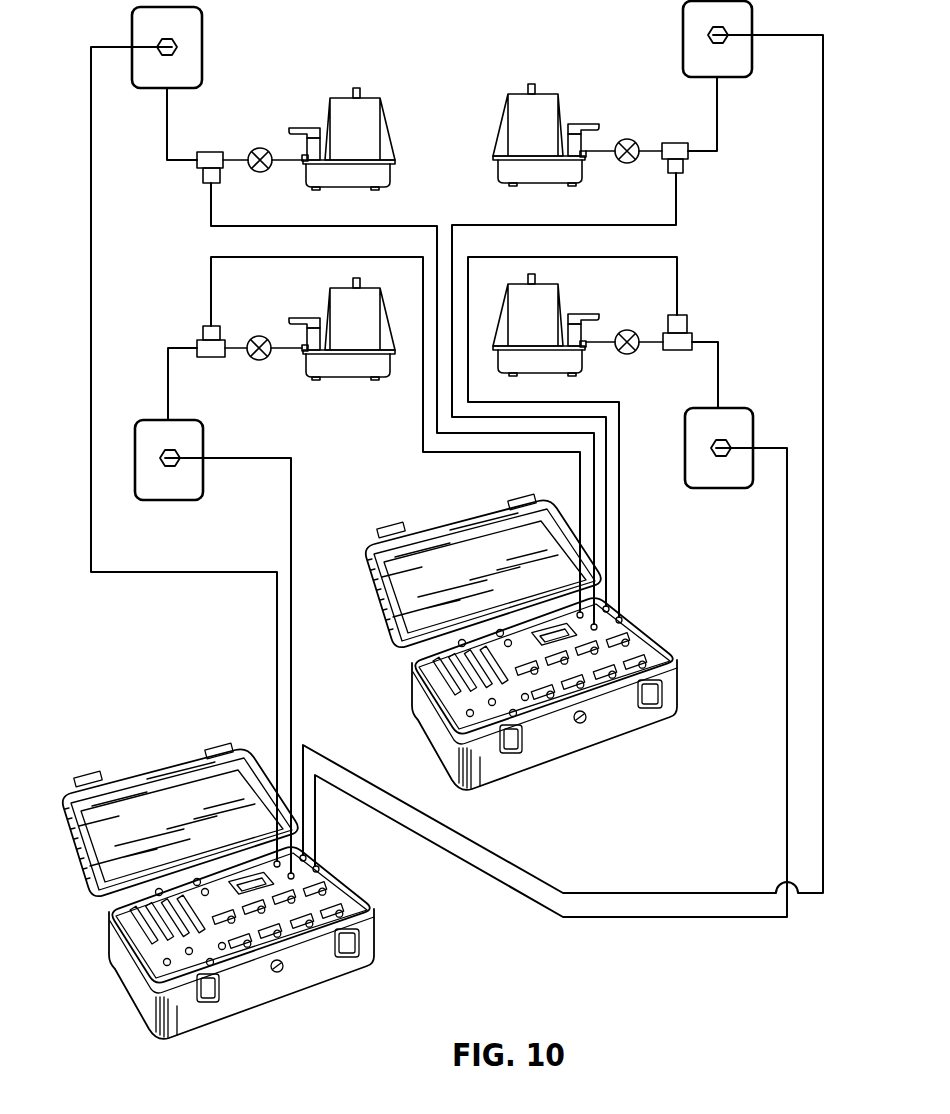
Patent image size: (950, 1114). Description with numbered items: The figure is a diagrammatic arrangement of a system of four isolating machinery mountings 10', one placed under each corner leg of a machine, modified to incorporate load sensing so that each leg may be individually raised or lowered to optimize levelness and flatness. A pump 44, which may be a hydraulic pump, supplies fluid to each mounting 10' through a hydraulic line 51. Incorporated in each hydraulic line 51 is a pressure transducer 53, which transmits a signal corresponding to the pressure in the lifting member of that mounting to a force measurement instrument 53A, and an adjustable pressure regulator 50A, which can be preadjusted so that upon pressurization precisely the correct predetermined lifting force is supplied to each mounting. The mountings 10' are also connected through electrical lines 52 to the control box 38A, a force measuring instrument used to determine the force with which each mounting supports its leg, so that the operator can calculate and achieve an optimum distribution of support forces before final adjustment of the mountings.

The isolating machinery mounting 10' is at (472, 265).
The pump 44 is at (380, 98).
The adjustable pressure regulator 50A is at (258, 148).
The hydraulic line 51 is at (166, 128).
The electrical line 52 is at (91, 288).
The pressure transducer 53 is at (210, 152).
The force measurement instrument 53A is at (675, 648).
The control box 38A is at (132, 1003).